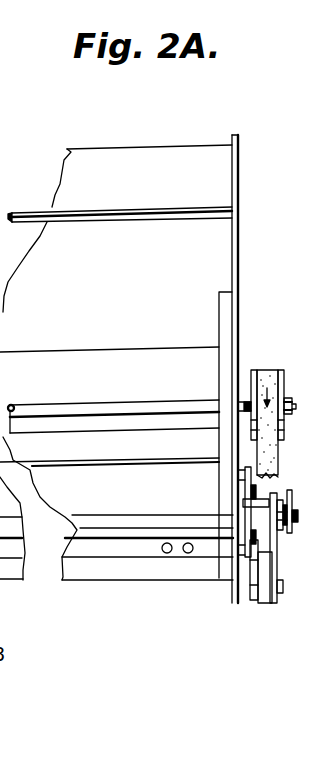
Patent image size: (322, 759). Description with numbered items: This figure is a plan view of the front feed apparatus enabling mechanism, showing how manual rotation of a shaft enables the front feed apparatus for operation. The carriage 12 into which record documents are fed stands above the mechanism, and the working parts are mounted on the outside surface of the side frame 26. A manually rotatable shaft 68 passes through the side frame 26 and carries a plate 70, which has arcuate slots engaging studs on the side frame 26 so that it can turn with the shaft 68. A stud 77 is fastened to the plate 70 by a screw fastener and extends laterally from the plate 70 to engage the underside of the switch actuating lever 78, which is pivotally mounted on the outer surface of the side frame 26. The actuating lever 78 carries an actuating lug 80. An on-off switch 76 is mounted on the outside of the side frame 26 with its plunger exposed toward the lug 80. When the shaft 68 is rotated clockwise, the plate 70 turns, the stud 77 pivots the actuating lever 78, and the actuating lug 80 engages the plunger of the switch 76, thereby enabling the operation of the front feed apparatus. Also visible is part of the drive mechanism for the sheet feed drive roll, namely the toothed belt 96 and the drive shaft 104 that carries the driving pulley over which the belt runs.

The carriage 12 is at (239, 163).
The side frame 26 is at (239, 587).
The manually rotatable shaft 68 is at (293, 516).
The plate 70 is at (278, 577).
The on-off switch 76 is at (265, 604).
The stud 77 is at (252, 525).
The switch actuating lever 78 is at (255, 596).
The actuating lug 80 is at (282, 594).
The toothed belt 96 is at (262, 378).
The drive shaft 104 is at (291, 396).